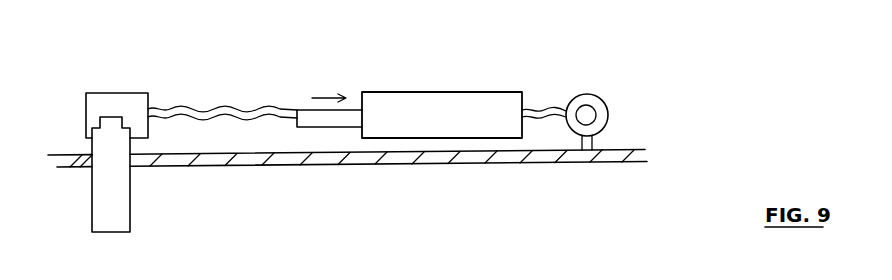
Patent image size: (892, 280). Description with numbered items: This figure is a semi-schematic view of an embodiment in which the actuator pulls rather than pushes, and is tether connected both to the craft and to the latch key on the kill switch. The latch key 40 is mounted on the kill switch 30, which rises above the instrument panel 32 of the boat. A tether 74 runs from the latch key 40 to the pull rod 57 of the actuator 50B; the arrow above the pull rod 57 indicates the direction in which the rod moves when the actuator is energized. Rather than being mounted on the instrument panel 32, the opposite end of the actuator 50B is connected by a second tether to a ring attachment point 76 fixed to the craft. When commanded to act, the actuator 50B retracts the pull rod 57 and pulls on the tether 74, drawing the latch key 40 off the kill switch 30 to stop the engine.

The kill switch 30 is at (130, 213).
The instrument panel 32 is at (517, 161).
The latch key 40 is at (122, 93).
The actuator 50B is at (462, 92).
The pull rod 57 is at (323, 121).
The tether 74 is at (222, 106).
The ring attachment point 76 is at (598, 97).